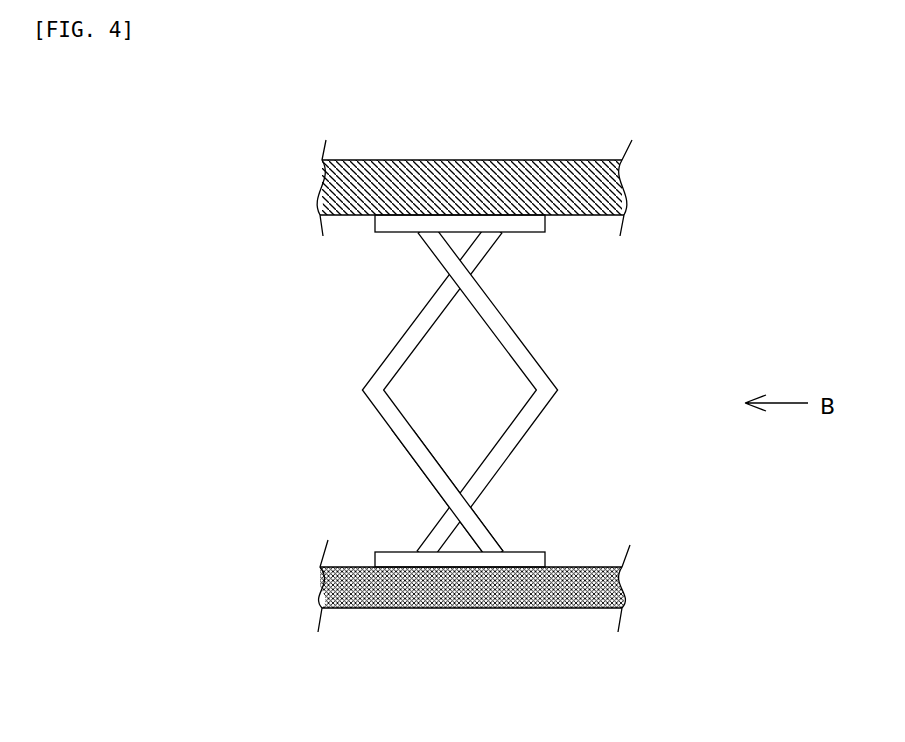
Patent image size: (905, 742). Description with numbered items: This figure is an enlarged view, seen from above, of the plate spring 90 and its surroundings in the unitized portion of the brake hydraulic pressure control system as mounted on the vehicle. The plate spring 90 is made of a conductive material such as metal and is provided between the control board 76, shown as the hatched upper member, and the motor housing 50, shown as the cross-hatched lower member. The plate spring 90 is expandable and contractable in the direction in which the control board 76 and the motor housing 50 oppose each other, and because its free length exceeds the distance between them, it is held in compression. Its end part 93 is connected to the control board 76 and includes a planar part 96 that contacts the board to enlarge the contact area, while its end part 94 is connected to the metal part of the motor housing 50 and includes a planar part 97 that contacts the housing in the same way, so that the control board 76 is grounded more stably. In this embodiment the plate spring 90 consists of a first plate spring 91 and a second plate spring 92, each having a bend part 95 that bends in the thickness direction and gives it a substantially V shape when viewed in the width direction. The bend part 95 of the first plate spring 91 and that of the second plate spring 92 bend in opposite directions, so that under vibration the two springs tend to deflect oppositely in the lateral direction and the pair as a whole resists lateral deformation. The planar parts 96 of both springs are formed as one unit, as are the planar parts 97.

The motor housing 50 is at (472, 590).
The control board 76 is at (463, 182).
The plate spring 90 is at (457, 392).
The first plate spring 91 is at (537, 353).
The second plate spring 92 is at (383, 351).
The end part 93 is at (424, 234).
The end part 94 is at (420, 549).
The bend part 95 is at (366, 390).
The planar part 96 is at (399, 226).
The planar part 97 is at (400, 560).